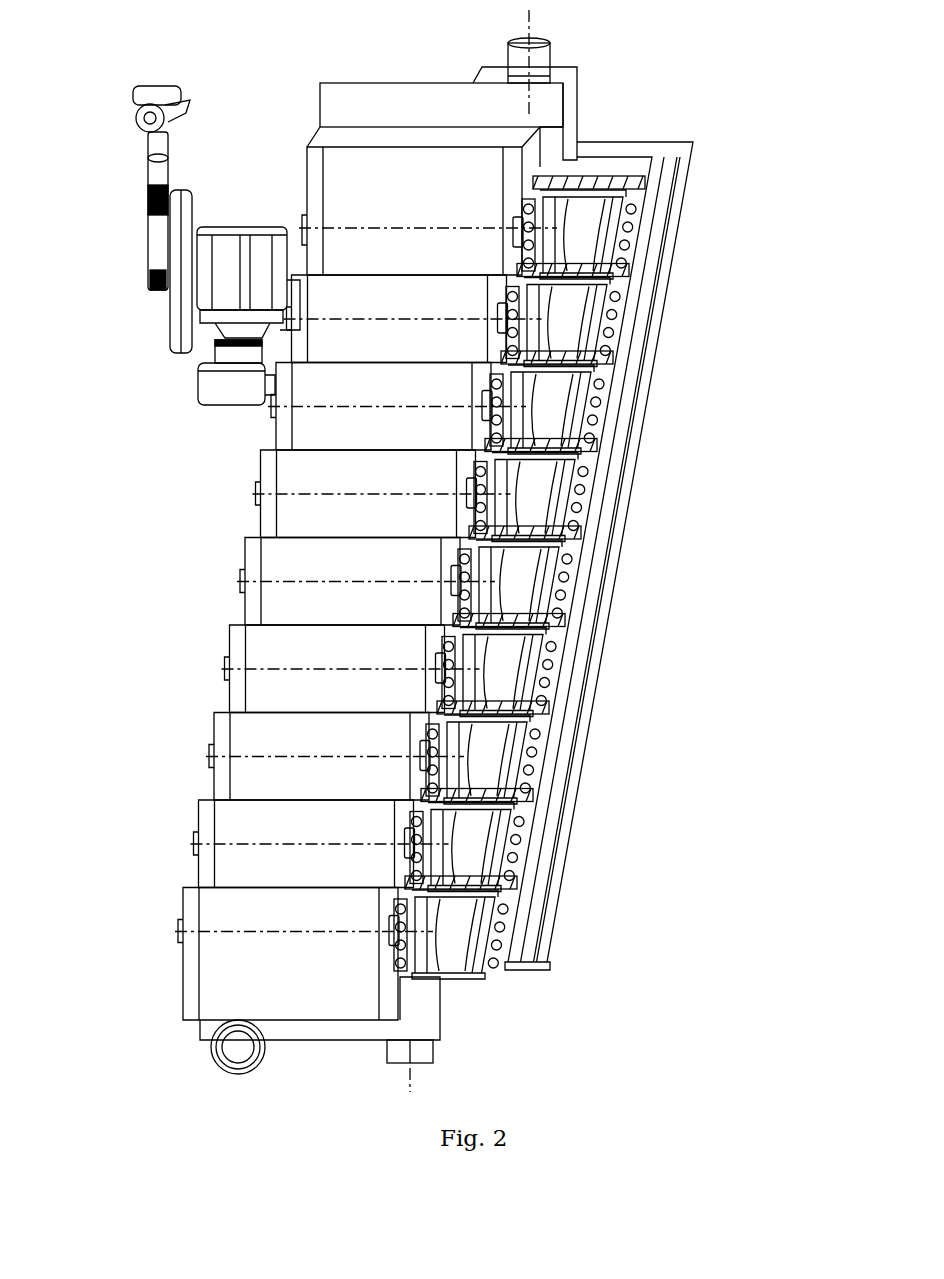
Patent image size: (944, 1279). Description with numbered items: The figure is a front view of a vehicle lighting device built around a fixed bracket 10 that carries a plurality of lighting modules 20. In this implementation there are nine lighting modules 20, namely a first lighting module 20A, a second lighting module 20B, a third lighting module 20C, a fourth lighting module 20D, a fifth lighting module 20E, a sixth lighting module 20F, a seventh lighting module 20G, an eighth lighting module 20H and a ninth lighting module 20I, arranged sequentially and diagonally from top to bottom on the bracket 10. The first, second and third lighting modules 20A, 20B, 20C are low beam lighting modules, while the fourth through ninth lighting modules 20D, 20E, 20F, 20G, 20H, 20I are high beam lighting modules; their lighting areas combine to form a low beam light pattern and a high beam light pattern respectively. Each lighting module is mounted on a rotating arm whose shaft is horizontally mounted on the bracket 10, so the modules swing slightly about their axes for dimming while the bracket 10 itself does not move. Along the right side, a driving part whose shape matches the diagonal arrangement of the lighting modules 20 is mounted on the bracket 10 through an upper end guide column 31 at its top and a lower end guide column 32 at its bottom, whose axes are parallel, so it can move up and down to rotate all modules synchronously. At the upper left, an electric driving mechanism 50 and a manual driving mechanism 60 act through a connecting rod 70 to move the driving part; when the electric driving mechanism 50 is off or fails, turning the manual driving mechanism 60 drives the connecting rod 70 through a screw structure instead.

The bracket 10 is at (540, 107).
The lighting modules 20 is at (797, 247).
The first lighting module 20A is at (578, 243).
The second lighting module 20B is at (562, 330).
The third lighting module 20C is at (546, 418).
The fourth lighting module 20D is at (530, 505).
The fifth lighting module 20E is at (514, 593).
The sixth lighting module 20F is at (498, 680).
The seventh lighting module 20G is at (482, 768).
The eighth lighting module 20H is at (466, 856).
The ninth lighting module 20I is at (450, 943).
The upper end guide column 31 is at (553, 53).
The lower end guide column 32 is at (415, 1055).
The electric driving mechanism 50 is at (198, 300).
The manual driving mechanism 60 is at (148, 182).
The connecting rod 70 is at (218, 385).